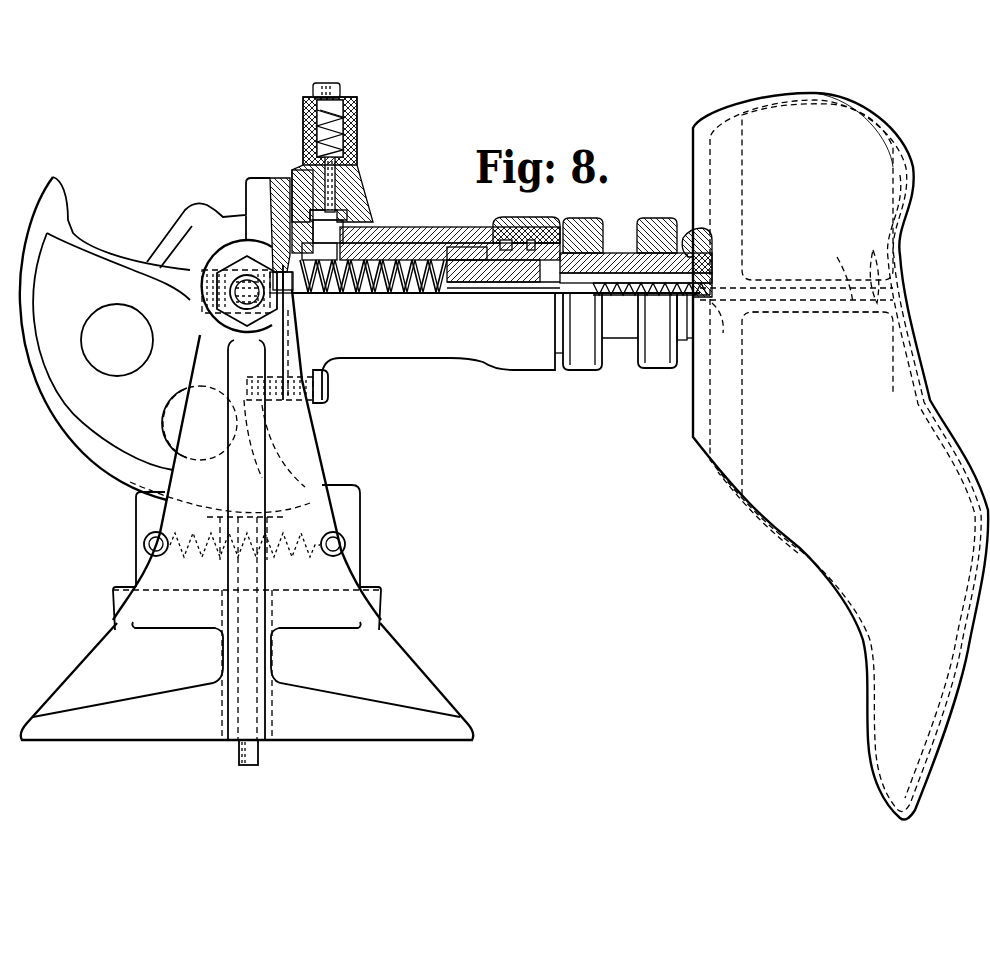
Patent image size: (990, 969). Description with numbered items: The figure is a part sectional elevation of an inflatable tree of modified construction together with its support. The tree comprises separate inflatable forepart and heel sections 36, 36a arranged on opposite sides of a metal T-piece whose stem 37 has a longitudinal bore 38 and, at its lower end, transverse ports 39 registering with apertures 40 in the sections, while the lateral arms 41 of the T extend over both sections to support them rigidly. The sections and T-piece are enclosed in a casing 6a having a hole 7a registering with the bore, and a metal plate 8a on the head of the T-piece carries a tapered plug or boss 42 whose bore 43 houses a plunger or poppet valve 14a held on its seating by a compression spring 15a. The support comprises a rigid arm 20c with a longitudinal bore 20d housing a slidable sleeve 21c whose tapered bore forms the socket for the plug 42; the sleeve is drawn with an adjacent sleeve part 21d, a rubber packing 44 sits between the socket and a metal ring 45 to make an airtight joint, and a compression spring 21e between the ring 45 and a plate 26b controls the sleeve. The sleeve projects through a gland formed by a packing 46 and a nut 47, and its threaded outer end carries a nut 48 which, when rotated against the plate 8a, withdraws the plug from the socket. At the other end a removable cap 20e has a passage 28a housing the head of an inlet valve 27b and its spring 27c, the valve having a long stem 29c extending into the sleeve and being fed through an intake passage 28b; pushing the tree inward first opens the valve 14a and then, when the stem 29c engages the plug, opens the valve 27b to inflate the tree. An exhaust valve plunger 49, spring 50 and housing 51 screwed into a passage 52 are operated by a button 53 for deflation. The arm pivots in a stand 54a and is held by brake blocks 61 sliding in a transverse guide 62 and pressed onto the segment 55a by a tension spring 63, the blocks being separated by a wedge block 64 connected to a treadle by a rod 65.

The button 53 is at (320, 86).
The housing 51 is at (357, 113).
The compression spring 50 is at (350, 147).
The poppet or plunger 49 is at (345, 200).
The passage 52 is at (337, 237).
The longitudinal bore 20d is at (286, 183).
The removable cap 20e is at (219, 205).
The intake passage 28b is at (213, 270).
The slidable sleeve 21c is at (407, 237).
The lower bar 21d is at (437, 252).
The compression spring 21e is at (363, 293).
The metal ring 45 is at (475, 255).
The rubber packing 46 is at (525, 235).
The nut 47 is at (577, 227).
The tapered plug or boss 42 is at (610, 273).
The bore or longitudinal passage 43 is at (650, 293).
The metal plate 8a is at (697, 233).
The compression spring 15a is at (648, 293).
The plunger or poppet valve 14a is at (603, 293).
The nut 48 is at (653, 367).
The rubber packing 44 is at (493, 280).
The valve stem 29c is at (405, 292).
The plate 26b is at (310, 262).
The poppet or plunger 27b is at (275, 287).
The rigid arm 20c is at (413, 353).
The longitudinal passage 28a is at (227, 318).
The compression spring 27c is at (197, 320).
The segment 55a is at (80, 417).
The stand or frame 54a is at (307, 440).
The wedge block 64 is at (220, 517).
The brake blocks 61 is at (140, 512).
The transverse groove or guide 62 is at (363, 593).
The tension spring 63 is at (287, 560).
The rod or link 65 is at (258, 753).
The forepart section 36 is at (888, 713).
The heel section 36a is at (893, 167).
The casing or covering 6a is at (925, 457).
The lateral arms 41 is at (730, 195).
The longitudinal bore or passage 38 is at (767, 297).
The transverse ports or holes 39 is at (837, 270).
The holes or apertures 40 is at (877, 257).
The stem 37 is at (793, 307).
The hole 7a is at (723, 329).